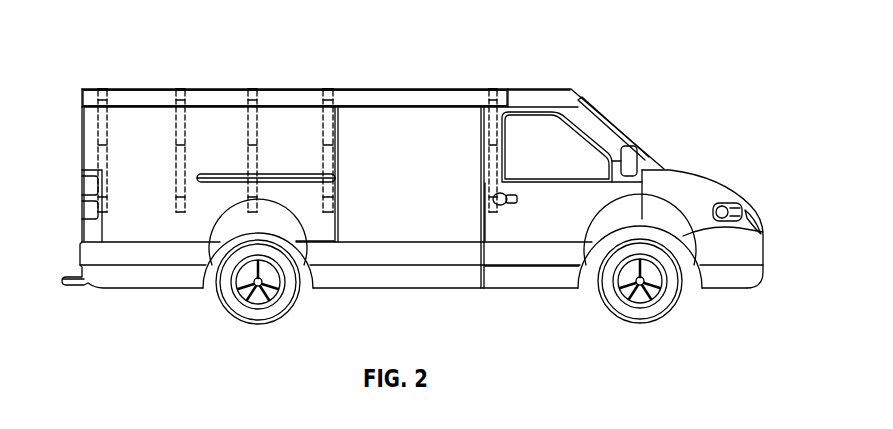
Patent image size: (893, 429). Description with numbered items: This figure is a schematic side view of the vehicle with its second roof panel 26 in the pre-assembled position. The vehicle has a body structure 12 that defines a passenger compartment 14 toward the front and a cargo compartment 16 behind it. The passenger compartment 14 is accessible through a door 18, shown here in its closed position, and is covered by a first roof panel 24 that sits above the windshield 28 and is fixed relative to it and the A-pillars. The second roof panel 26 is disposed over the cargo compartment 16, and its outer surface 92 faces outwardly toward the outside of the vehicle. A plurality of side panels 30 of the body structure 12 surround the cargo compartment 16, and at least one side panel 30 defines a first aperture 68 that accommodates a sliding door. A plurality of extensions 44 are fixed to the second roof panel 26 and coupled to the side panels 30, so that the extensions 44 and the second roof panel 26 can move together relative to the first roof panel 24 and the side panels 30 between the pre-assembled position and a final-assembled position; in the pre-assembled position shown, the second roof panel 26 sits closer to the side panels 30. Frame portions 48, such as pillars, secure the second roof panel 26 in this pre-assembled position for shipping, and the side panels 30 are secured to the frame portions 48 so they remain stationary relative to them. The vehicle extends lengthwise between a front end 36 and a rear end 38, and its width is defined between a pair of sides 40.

The body structure 12 is at (150, 340).
The passenger compartment 14 is at (580, 141).
The cargo compartment 16 is at (120, 134).
The door 18 is at (530, 235).
The first roof panel 24 is at (580, 93).
The second roof panel 26 is at (220, 93).
The windshield 28 is at (645, 163).
The side panel 30 is at (82, 158).
The front end 36 is at (748, 200).
The rear end 38 is at (82, 237).
The side 40 is at (502, 280).
The extension 44 is at (115, 120).
The frame portion 48 is at (173, 192).
The first aperture 68 is at (433, 242).
The outer surface 92 is at (418, 89).